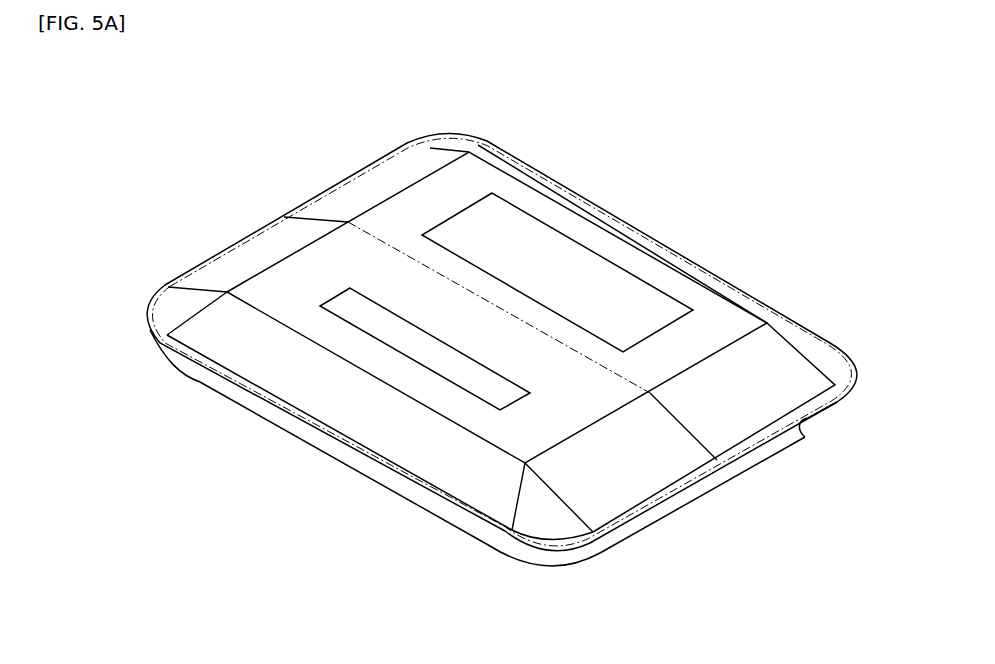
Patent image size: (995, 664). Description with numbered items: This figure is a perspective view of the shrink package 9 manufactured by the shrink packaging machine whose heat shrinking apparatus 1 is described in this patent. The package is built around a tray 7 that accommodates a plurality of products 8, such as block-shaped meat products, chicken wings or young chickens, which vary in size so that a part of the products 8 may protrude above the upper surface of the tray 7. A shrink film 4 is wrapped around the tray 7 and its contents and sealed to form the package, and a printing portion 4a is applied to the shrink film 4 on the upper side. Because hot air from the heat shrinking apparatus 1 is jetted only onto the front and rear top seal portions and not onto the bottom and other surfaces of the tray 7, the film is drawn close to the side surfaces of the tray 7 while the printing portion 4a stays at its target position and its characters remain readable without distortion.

The heat shrinking apparatus 1 is at (760, 427).
The shrink film 4 is at (183, 362).
The printing portion 4a is at (530, 228).
The tray 7 is at (722, 318).
The products 8 is at (340, 455).
The shrink package 9 is at (646, 182).